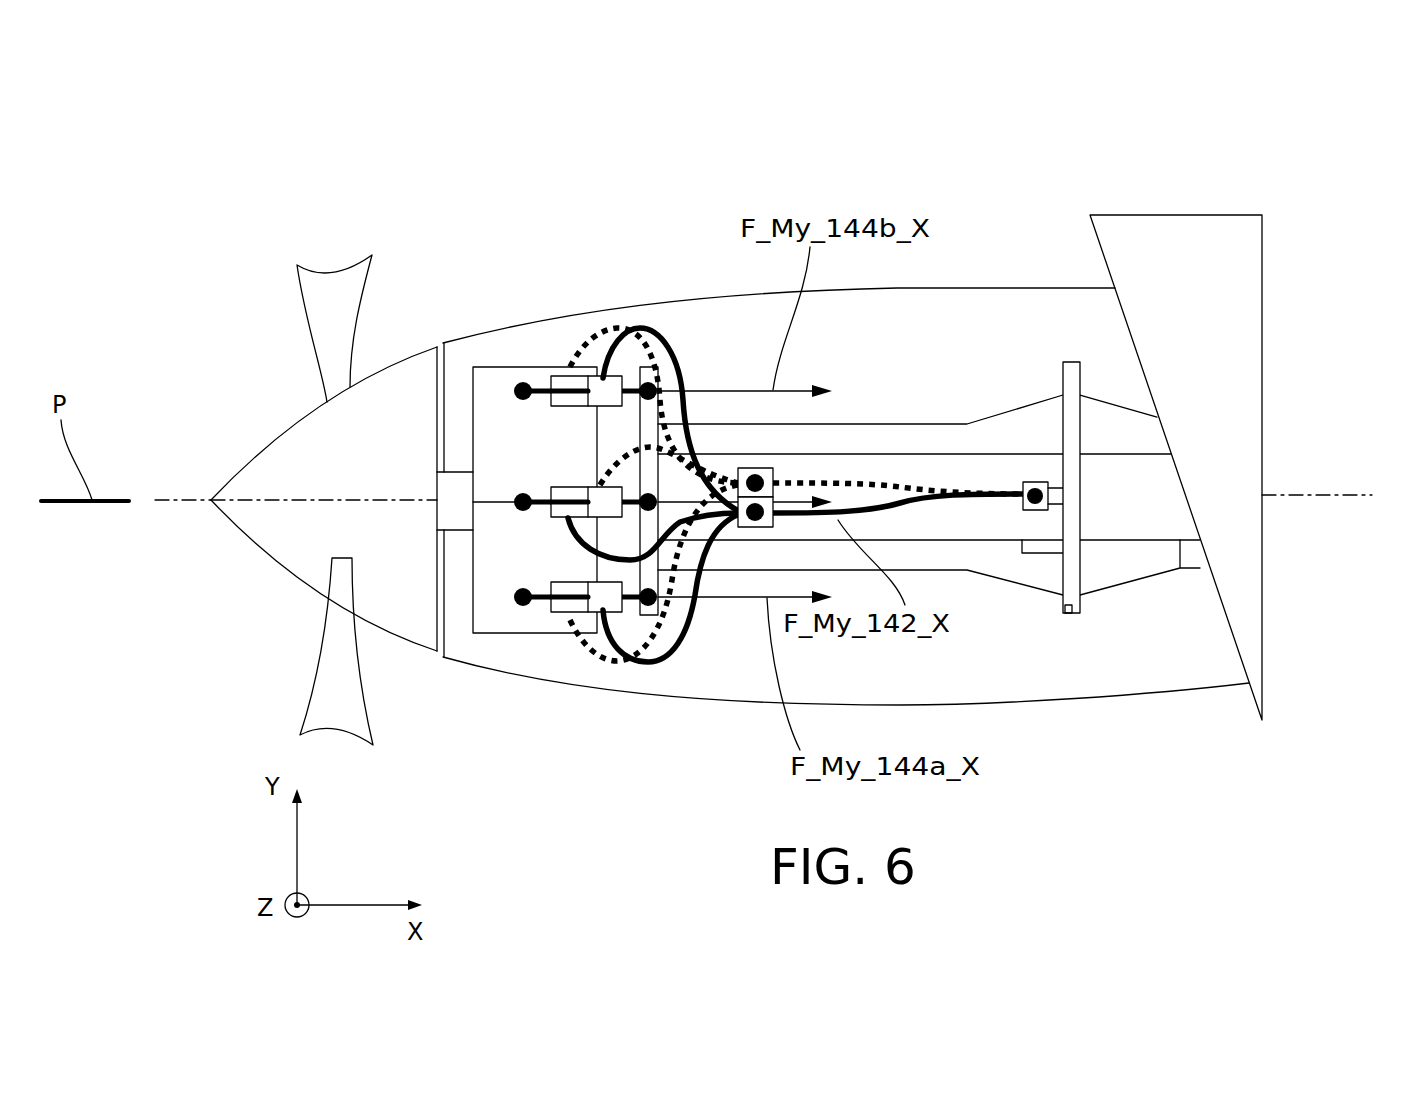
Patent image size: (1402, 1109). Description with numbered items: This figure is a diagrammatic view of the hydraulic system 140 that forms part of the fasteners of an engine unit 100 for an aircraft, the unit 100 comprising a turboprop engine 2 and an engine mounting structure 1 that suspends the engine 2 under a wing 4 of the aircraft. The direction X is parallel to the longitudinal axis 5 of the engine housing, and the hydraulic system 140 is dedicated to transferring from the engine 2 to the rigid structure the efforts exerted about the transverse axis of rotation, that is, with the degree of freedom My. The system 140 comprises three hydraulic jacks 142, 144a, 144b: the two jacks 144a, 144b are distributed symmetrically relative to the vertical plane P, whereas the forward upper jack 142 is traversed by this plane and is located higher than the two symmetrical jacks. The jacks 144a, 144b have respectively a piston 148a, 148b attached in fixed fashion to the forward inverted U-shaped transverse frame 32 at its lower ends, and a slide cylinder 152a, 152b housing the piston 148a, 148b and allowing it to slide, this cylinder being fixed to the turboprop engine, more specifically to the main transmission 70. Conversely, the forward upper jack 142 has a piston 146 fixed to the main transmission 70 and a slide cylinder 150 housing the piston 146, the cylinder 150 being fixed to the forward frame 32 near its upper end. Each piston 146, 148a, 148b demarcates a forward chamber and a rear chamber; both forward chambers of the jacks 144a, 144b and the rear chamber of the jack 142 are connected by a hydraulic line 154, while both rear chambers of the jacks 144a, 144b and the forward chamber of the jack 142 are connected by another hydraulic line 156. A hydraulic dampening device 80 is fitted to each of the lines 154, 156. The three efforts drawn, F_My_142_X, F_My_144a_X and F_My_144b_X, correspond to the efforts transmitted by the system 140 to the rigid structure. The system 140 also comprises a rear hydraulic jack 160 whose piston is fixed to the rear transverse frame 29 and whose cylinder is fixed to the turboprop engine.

The engine mounting structure 1 is at (967, 548).
The turboprop engine 2 is at (957, 418).
The wing 4 is at (1262, 265).
The longitudinal axis 5 is at (168, 500).
The rear transverse frame 29 is at (1075, 615).
The second transverse frame 32 is at (690, 428).
The main transmission 70 is at (497, 428).
The hydraulic dampening device 80 is at (762, 468).
The engine unit 100 is at (631, 192).
The hydraulic system 140 is at (795, 380).
The forward upper hydraulic jack 142 is at (536, 516).
The hydraulic jack 144a is at (542, 612).
The hydraulic jack 144b is at (552, 348).
The piston 146 is at (546, 490).
The piston 148a is at (637, 607).
The piston 148b is at (640, 328).
The slide cylinder 150 is at (603, 488).
The slide cylinder 152a is at (587, 643).
The slide cylinder 152b is at (550, 375).
The hydraulic line 154 is at (680, 370).
The hydraulic line 156 is at (964, 485).
The rear hydraulic jack 160 is at (1034, 476).